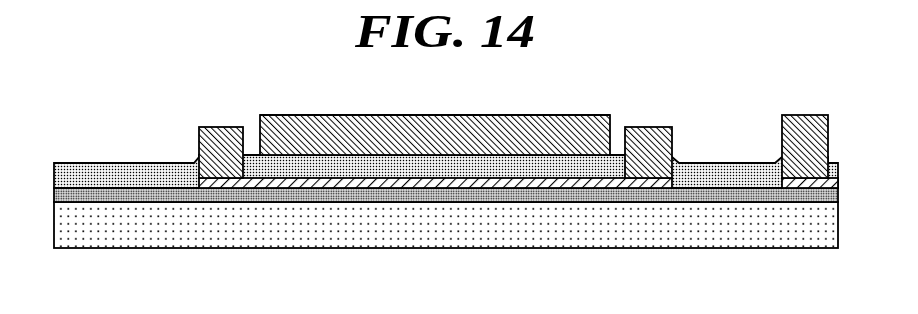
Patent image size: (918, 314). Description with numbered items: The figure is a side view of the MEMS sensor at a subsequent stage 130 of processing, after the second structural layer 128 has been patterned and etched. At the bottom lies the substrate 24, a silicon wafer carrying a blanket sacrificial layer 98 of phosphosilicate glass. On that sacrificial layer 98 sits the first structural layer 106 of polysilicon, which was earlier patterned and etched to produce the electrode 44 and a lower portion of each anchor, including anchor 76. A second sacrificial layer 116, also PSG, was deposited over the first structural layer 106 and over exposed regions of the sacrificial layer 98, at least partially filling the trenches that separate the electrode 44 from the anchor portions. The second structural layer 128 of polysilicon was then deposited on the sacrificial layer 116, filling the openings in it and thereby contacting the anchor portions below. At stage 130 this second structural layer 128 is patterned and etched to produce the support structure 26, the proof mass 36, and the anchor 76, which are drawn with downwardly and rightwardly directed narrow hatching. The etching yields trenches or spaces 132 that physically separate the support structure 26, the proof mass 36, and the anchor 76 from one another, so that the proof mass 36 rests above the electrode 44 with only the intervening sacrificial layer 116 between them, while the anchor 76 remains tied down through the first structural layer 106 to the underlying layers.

The substrate 24 is at (638, 238).
The sacrificial layer 98 is at (842, 197).
The first structural layer 106 is at (838, 182).
The electrode 44 is at (260, 183).
The sacrificial layer 116 is at (838, 167).
The support structure 26 is at (206, 127).
The proof mass 36 is at (463, 114).
The second structural layer 128 is at (297, 109).
The anchor 76 is at (798, 125).
The trenches or spaces 132 is at (252, 120).
The stage of processing 130 is at (450, 292).